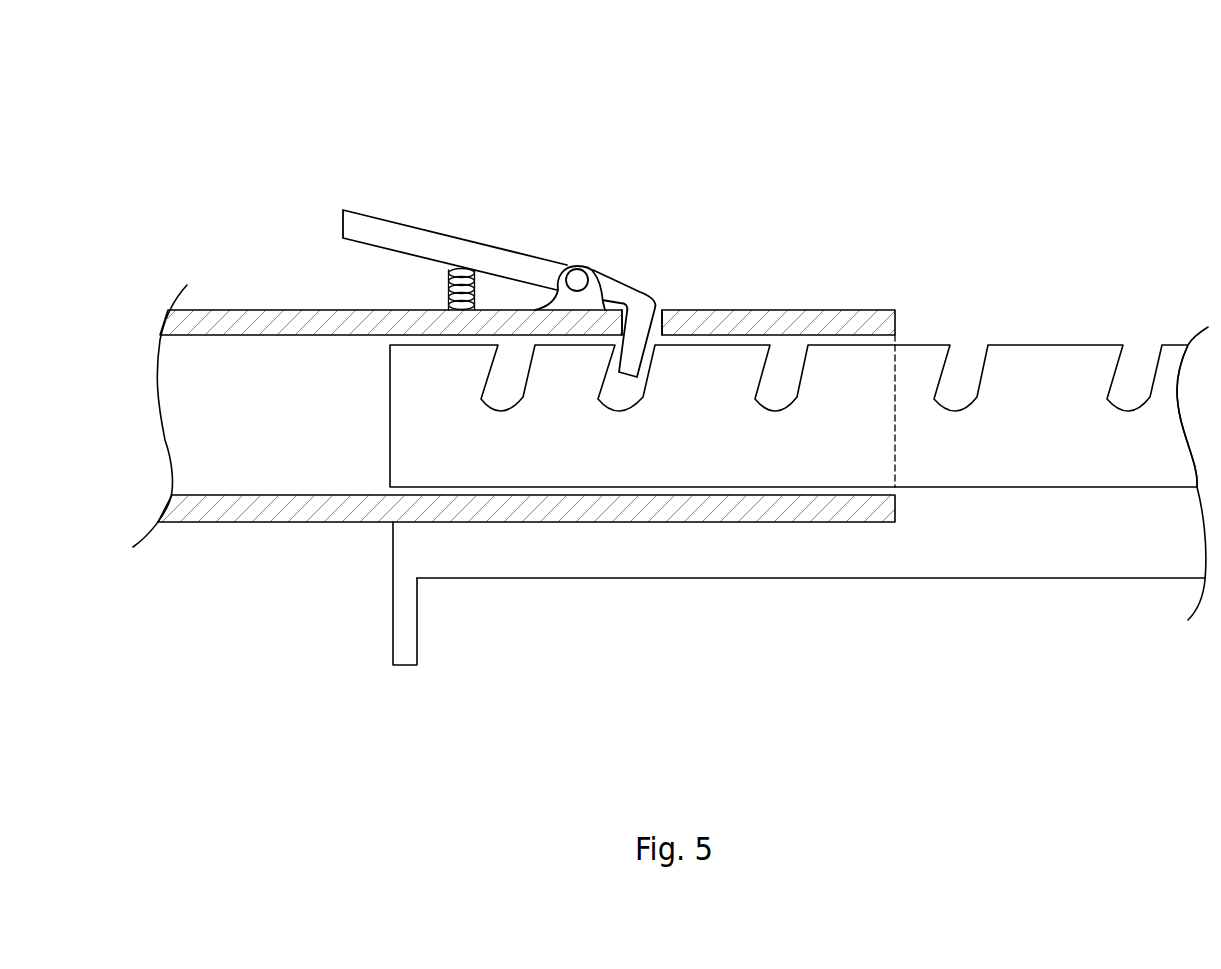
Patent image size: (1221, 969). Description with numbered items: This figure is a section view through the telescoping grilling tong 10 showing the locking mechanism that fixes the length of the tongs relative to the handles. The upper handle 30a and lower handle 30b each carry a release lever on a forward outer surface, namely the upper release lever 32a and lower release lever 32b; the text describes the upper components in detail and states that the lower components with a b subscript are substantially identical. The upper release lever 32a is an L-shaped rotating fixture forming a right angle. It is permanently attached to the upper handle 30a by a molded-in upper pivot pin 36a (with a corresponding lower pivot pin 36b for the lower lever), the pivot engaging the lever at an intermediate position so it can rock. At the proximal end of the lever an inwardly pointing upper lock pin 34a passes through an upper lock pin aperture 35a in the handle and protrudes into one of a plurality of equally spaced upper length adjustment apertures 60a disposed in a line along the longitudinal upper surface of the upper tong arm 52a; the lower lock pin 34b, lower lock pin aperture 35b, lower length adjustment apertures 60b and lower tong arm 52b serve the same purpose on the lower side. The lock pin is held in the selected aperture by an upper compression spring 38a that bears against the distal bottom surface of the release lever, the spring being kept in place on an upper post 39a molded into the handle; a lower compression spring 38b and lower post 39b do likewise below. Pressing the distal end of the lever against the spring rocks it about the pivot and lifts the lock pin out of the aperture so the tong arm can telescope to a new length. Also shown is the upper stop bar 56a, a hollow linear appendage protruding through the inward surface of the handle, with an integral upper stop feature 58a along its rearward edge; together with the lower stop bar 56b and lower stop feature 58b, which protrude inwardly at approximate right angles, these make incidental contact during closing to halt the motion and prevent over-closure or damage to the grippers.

The telescoping grilling tong 10 is at (192, 143).
The upper handle 30a is at (518, 388).
The lower handle 30b is at (865, 308).
The upper release lever 32a is at (458, 364).
The lower release lever 32b is at (458, 364).
The upper lock pin 34a is at (546, 463).
The lower lock pin 34b is at (610, 402).
The upper lock pin aperture 35a is at (715, 286).
The lower lock pin aperture 35b is at (668, 310).
The upper pivot pin 36a is at (598, 247).
The lower pivot pin 36b is at (580, 278).
The upper compression spring 38a is at (495, 243).
The lower compression spring 38b is at (462, 275).
The upper post 39a is at (391, 259).
The lower post 39b is at (445, 308).
The upper tong arm 52a is at (732, 439).
The lower tong arm 52b is at (732, 439).
The upper stop bar 56a is at (736, 599).
The lower stop bar 56b is at (736, 599).
The upper stop feature 58a is at (342, 599).
The lower stop feature 58b is at (392, 610).
The upper length adjustment apertures 60a is at (732, 453).
The lower length adjustment apertures 60b is at (1123, 382).